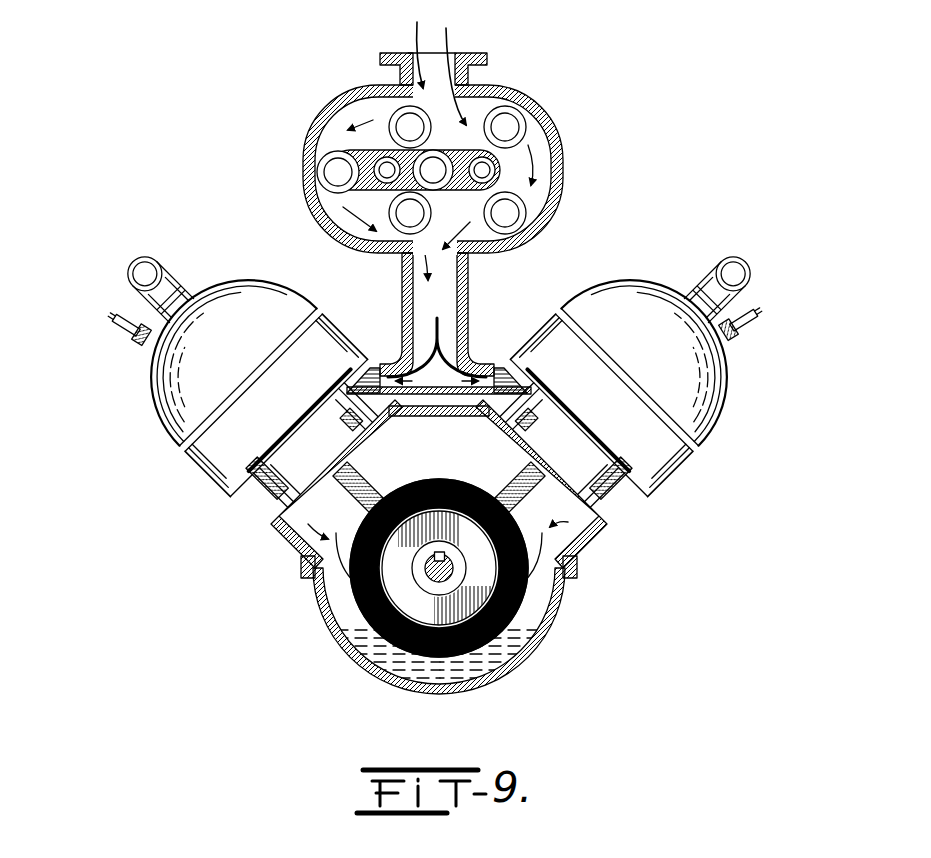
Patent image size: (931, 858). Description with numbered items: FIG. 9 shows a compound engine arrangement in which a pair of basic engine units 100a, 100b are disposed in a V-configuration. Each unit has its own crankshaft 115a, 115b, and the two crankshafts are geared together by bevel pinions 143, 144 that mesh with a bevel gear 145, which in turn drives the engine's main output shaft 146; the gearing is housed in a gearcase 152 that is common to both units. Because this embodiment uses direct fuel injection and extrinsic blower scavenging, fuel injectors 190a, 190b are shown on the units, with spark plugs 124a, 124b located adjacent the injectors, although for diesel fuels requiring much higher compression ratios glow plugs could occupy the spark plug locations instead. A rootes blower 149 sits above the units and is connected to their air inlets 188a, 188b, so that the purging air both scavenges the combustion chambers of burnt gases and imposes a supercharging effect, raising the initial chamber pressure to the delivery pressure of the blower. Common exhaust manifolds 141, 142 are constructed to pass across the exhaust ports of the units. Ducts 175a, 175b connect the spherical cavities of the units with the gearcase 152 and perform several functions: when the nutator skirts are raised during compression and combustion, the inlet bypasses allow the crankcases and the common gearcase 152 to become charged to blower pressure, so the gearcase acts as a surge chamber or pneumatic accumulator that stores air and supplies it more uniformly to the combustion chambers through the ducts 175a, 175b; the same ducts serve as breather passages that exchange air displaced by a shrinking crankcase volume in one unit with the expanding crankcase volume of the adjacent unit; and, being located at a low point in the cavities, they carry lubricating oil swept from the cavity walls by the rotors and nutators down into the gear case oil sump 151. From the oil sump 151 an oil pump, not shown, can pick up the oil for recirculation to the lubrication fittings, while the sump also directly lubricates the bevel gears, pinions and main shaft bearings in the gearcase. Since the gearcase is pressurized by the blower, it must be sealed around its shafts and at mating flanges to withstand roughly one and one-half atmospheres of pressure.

The rootes blower 149 is at (538, 110).
The common exhaust manifold 142 is at (159, 261).
The common exhaust manifold 141 is at (711, 260).
The spark plug 124b is at (115, 320).
The spark plug 124a is at (737, 328).
The fuel injector 190b is at (126, 322).
The fuel injector 190a is at (753, 314).
The left cylinder 100b is at (155, 412).
The right cylinder 100a is at (720, 412).
The air inlet 188b is at (376, 366).
The air inlet 188a is at (494, 366).
The breather duct 175b is at (262, 490).
The breather duct 175a is at (608, 492).
The crankshaft 115b is at (312, 568).
The crankshaft 115a is at (577, 560).
The bevel pinion 143 is at (526, 585).
The bevel pinion 144 is at (372, 556).
The bevel gear 145 is at (514, 594).
The main output shaft 146 is at (427, 573).
The gear case oil sump 151 is at (398, 665).
The gearcase 152 is at (505, 663).